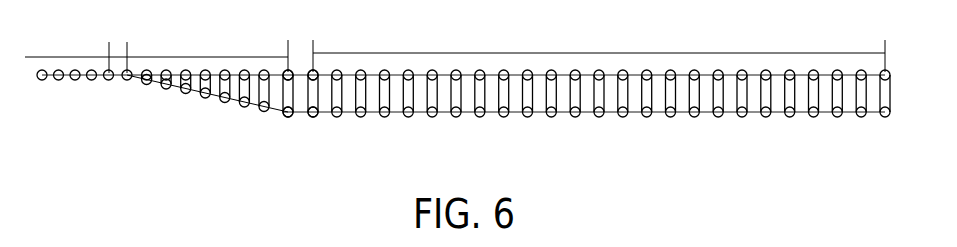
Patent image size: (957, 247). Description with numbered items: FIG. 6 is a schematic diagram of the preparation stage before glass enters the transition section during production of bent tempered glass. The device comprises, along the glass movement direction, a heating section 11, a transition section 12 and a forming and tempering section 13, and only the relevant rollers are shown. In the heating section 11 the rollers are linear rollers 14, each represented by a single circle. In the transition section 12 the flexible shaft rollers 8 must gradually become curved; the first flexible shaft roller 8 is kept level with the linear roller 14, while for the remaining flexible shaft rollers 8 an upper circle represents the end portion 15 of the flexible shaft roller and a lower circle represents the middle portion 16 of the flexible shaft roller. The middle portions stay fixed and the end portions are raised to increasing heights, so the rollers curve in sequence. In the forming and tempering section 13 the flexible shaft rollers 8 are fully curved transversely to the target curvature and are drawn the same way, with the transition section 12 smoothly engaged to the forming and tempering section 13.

The flexible shaft roller 8 is at (283, 88).
The heating section 11 is at (76, 57).
The transition section 12 is at (205, 73).
The forming and tempering section 13 is at (599, 75).
The linear roller 14 is at (63, 106).
The end portion of flexible shaft roller 15 is at (286, 81).
The middle portion of flexible shaft roller 16 is at (287, 116).